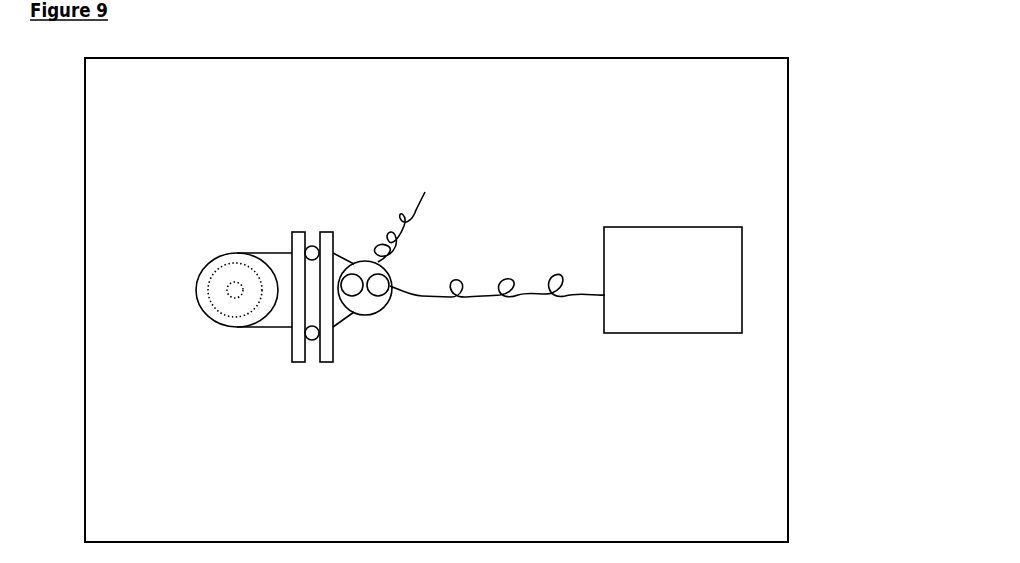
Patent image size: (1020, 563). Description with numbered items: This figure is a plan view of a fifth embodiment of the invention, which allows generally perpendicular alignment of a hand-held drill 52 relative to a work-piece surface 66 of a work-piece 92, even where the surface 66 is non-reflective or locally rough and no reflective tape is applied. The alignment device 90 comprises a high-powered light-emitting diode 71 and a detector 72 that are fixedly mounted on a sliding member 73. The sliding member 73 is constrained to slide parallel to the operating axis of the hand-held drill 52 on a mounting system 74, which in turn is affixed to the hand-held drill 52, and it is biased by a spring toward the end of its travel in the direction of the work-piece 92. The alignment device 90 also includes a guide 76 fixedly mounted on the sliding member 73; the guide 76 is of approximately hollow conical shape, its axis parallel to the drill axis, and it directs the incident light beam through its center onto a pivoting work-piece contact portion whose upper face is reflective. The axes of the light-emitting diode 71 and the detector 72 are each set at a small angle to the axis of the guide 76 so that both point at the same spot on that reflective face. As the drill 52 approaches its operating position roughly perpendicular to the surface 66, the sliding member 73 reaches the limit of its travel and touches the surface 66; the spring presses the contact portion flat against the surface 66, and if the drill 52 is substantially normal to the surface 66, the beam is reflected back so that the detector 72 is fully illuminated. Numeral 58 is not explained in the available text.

The work-piece 92 is at (772, 79).
The work-piece surface 66 is at (589, 135).
The hand-held drill 52 is at (192, 287).
The mounting system 74 is at (303, 232).
The sliding member 73 is at (332, 232).
The guide 76 is at (362, 298).
The light-emitting diode 71 is at (357, 293).
The detector 72 is at (390, 283).
The alignment device 90 is at (517, 328).
The collection box 58 is at (708, 230).